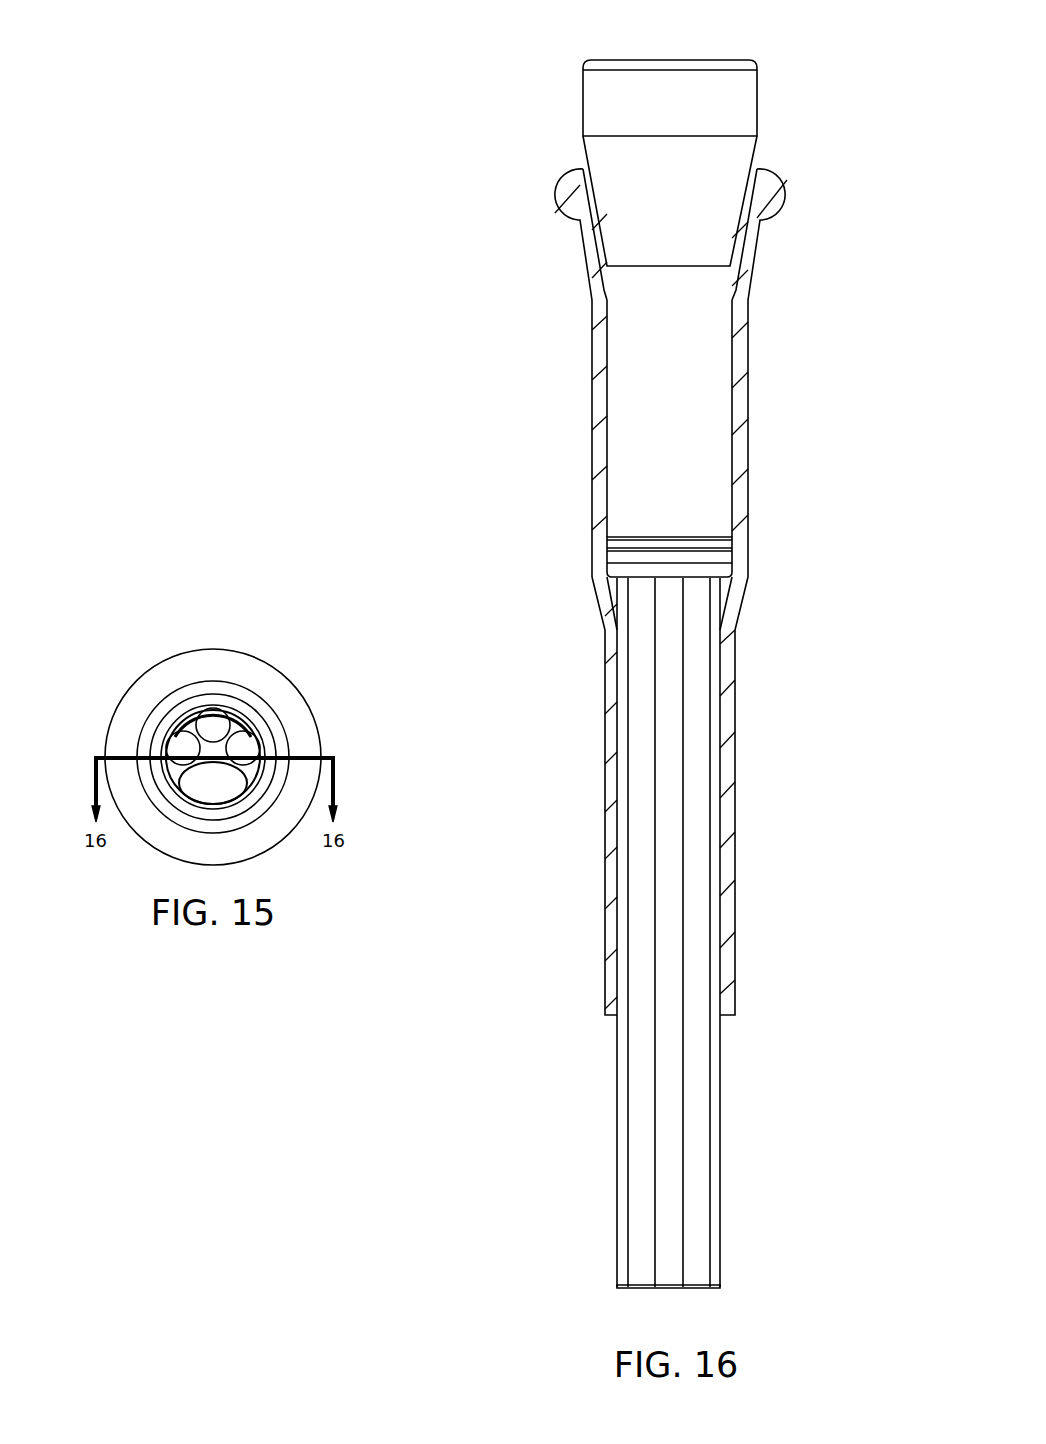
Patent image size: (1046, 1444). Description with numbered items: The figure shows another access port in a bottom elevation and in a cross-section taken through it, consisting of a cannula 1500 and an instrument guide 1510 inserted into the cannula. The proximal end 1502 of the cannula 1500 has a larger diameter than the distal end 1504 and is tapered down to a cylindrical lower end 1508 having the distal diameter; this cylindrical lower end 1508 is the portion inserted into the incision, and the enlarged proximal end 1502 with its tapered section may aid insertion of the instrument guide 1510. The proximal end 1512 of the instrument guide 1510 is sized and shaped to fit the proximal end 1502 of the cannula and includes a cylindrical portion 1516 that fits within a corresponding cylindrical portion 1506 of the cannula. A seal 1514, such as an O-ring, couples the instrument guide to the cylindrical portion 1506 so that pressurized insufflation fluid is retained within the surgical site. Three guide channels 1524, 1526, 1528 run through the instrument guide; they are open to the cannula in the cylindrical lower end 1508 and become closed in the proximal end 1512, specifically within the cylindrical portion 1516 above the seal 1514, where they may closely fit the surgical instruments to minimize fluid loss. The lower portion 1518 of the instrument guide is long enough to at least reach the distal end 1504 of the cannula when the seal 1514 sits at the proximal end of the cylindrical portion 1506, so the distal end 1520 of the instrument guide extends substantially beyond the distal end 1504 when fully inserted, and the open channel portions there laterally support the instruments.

In FIG. 16, the cannula 1500 is at (490, 455).
In FIG. 15, the cannula 1500 is at (230, 682).
In FIG. 16, the proximal end of the cannula 1502 is at (548, 193).
In FIG. 15, the proximal end of the cannula 1502 is at (272, 662).
In FIG. 16, the distal end of the cannula 1504 is at (617, 1017).
In FIG. 15, the distal end of the cannula 1504 is at (254, 722).
In FIG. 16, the cylindrical portion of the cannula 1506 is at (592, 437).
In FIG. 16, the cylindrical lower end 1508 is at (605, 822).
In FIG. 16, the instrument guide 1510 is at (583, 105).
In FIG. 16, the proximal end of the instrument guide 1512 is at (622, 60).
In FIG. 16, the seal 1514 is at (618, 543).
In FIG. 16, the cylindrical portion of the instrument guide 1516 is at (648, 370).
In FIG. 16, the lower portion of the instrument guide 1518 is at (618, 1168).
In FIG. 16, the distal end of the instrument guide 1520 is at (645, 1287).
In FIG. 16, the guide channel 1524 is at (712, 1228).
In FIG. 15, the guide channel 1524 is at (244, 748).
In FIG. 16, the guide channel 1526 is at (668, 1192).
In FIG. 15, the guide channel 1526 is at (213, 728).
In FIG. 16, the guide channel 1528 is at (628, 1228).
In FIG. 15, the guide channel 1528 is at (183, 748).